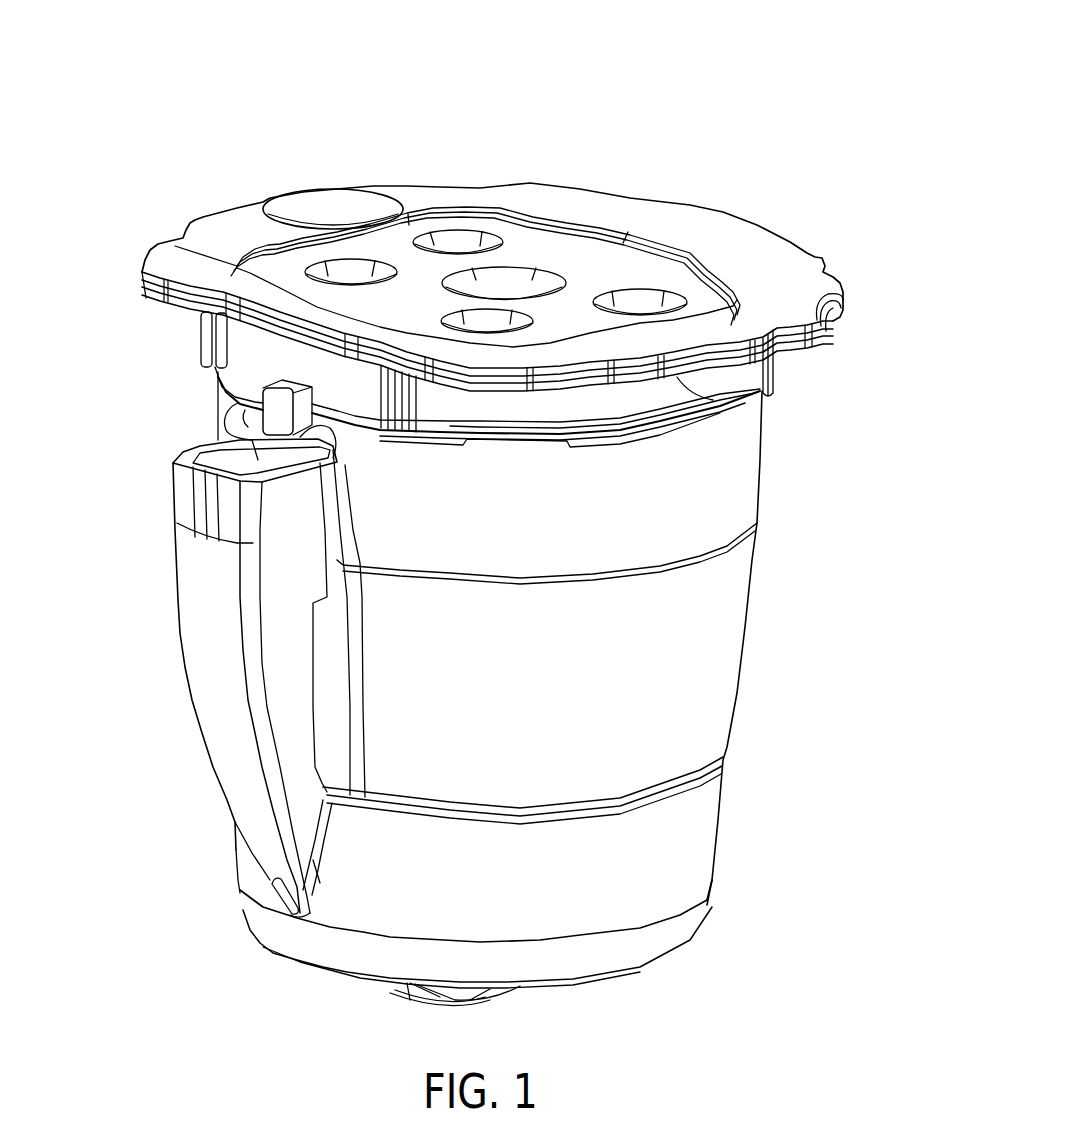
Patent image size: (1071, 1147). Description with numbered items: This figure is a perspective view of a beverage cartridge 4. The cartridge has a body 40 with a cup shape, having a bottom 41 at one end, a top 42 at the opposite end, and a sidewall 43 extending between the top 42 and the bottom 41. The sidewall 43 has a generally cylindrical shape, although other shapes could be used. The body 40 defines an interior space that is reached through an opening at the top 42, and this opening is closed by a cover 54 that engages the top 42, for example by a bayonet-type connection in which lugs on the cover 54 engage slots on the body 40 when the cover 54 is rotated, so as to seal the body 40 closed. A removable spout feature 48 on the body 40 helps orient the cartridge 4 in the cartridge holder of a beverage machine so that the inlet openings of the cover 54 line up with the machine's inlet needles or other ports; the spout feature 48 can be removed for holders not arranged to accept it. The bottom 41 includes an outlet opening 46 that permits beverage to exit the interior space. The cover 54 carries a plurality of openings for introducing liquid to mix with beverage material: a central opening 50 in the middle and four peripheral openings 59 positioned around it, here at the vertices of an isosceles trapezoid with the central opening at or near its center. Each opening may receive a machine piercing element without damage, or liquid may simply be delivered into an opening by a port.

The cartridge 4 is at (144, 88).
The body 40 is at (490, 556).
The bottom 41 is at (587, 980).
The top 42 is at (757, 435).
The sidewall 43 is at (726, 639).
The outlet opening 46 is at (420, 1003).
The spout feature 48 is at (197, 613).
The central opening 50 is at (548, 275).
The cover 54 is at (787, 313).
The peripheral openings 59 is at (190, 250).